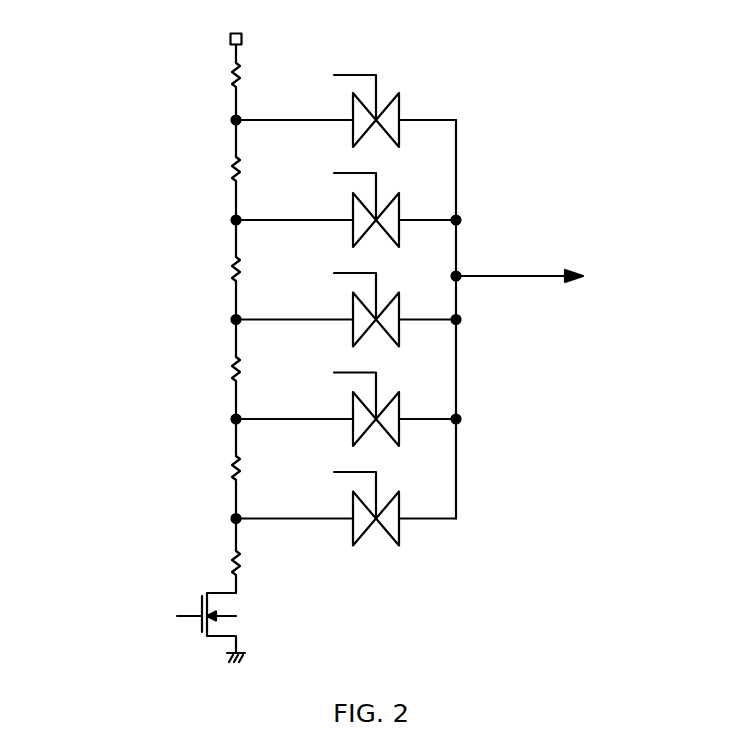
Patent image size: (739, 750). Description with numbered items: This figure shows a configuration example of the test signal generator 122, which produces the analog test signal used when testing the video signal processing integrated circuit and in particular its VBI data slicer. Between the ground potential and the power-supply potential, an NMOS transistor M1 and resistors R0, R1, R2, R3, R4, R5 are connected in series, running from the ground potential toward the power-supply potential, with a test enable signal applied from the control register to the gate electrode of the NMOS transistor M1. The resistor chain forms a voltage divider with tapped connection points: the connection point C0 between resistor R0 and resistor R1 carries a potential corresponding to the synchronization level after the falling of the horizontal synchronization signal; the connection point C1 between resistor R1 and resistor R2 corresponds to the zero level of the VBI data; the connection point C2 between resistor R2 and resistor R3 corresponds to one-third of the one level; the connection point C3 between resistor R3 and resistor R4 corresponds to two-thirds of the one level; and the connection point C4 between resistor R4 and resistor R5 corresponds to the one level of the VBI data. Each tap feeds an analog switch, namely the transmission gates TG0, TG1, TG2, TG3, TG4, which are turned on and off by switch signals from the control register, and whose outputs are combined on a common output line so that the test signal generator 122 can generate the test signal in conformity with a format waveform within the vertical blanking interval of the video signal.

The test signal generator 122 is at (462, 67).
The resistor R0 is at (217, 566).
The resistor R1 is at (217, 471).
The resistor R2 is at (217, 372).
The resistor R3 is at (217, 272).
The resistor R4 is at (217, 172).
The resistor R5 is at (217, 78).
The connection point C0 is at (274, 514).
The connection point C1 is at (274, 415).
The connection point C2 is at (274, 316).
The connection point C3 is at (274, 216).
The connection point C4 is at (274, 116).
The transmission gate TG0 is at (395, 496).
The transmission gate TG1 is at (397, 396).
The transmission gate TG2 is at (397, 297).
The transmission gate TG3 is at (397, 197).
The transmission gate TG4 is at (395, 98).
The NMOS transistor M1 is at (164, 623).